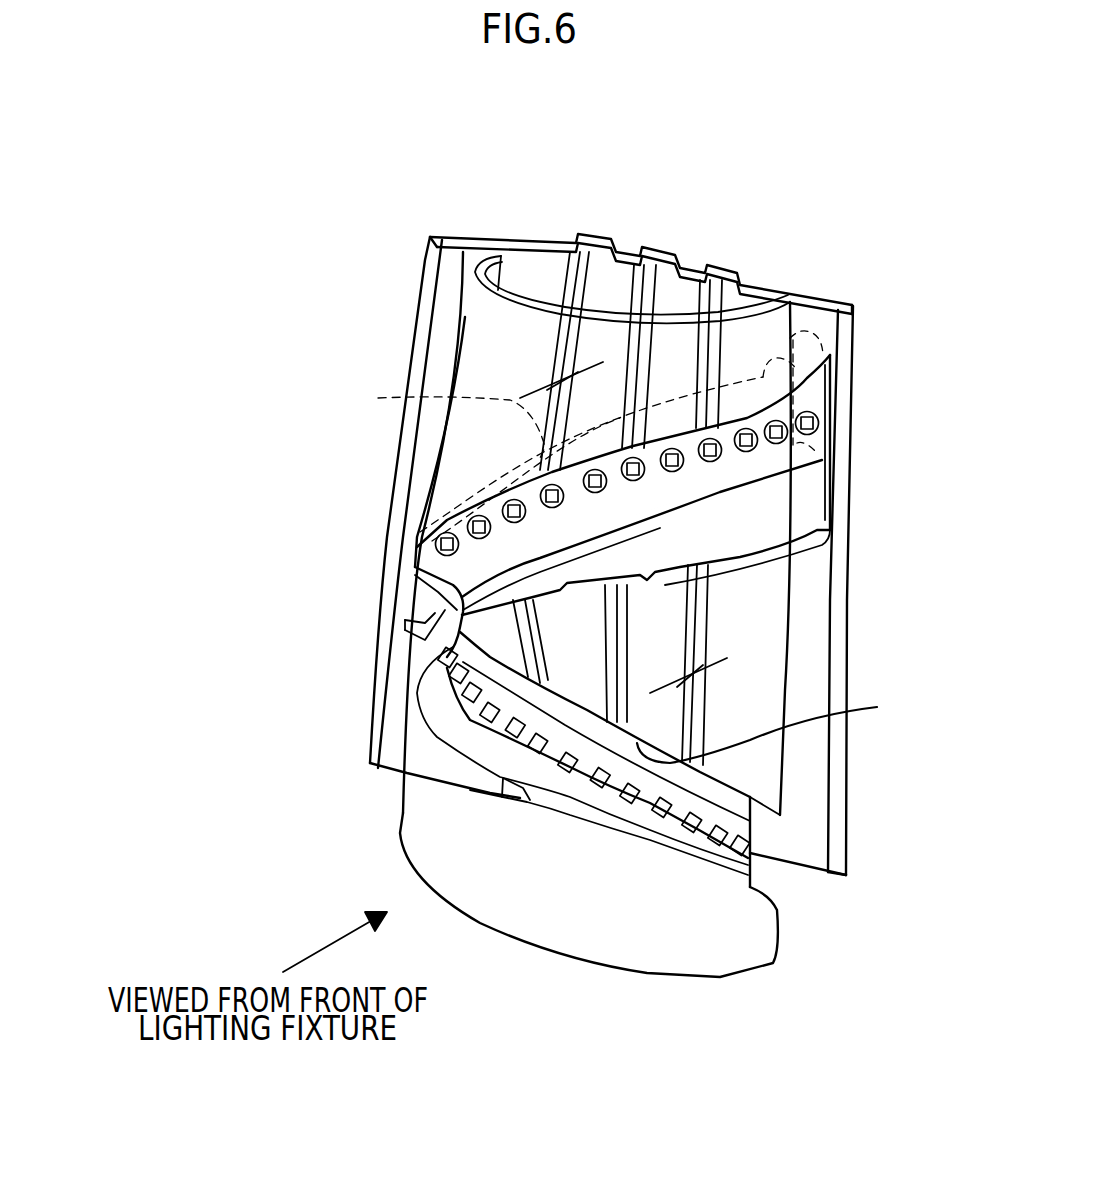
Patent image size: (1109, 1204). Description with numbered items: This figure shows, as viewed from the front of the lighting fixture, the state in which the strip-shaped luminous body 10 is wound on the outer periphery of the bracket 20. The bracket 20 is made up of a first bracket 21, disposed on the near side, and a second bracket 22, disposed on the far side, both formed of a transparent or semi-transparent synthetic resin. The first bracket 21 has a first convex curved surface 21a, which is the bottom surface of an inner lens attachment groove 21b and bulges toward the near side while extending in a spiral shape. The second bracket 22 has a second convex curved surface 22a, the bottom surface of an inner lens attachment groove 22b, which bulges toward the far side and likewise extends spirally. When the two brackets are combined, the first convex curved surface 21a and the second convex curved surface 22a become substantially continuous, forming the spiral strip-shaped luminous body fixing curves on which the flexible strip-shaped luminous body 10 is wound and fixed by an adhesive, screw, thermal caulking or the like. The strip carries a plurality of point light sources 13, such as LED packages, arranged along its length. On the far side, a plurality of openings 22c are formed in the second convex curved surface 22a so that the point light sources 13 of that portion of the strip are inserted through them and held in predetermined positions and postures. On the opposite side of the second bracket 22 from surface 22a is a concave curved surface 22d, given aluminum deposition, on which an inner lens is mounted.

The bracket 20 is at (548, 200).
The second bracket 22 is at (838, 822).
The second convex curved surface 22a is at (832, 390).
The inner lens attachment groove 22b is at (534, 458).
The openings 22c is at (482, 522).
The concave curved surface 22d is at (596, 511).
The point light sources 13 is at (480, 518).
The inner lens attachment groove 21b is at (877, 707).
The strip-shaped luminous body 10 is at (720, 813).
The first bracket 21 is at (545, 955).
The first convex curved surface 21a is at (697, 780).